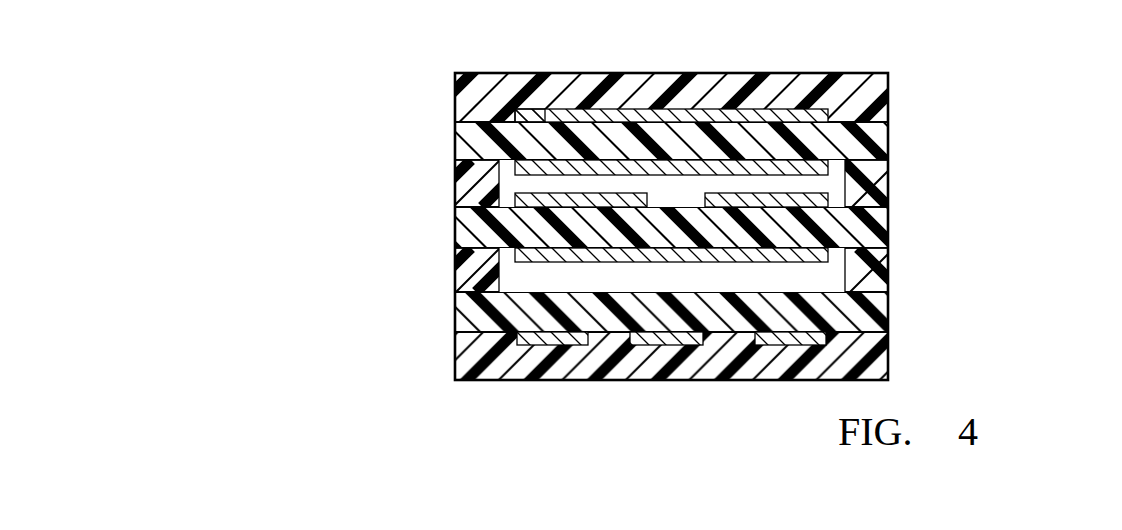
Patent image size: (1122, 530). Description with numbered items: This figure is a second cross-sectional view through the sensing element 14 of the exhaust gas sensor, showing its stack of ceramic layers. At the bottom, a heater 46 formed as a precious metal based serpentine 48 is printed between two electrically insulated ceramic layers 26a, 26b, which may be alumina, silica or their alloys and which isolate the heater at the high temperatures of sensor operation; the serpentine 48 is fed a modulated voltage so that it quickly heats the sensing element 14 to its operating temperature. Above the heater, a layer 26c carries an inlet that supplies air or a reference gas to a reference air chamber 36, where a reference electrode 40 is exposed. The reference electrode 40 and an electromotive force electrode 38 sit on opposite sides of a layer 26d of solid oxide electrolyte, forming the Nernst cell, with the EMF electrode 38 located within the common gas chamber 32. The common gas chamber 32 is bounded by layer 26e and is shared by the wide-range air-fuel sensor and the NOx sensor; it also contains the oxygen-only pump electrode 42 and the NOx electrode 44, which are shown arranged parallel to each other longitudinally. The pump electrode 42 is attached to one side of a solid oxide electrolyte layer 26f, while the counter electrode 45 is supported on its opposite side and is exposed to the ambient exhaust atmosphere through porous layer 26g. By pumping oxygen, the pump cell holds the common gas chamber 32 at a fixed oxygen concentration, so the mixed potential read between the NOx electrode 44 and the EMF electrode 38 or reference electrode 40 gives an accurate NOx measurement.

The sensing element 14 is at (375, 60).
The electrically insulated ceramic layer 26a is at (882, 360).
The electrically insulated ceramic layer 26b is at (882, 317).
The layer 26c is at (880, 275).
The solid oxide electrolyte layer 26d is at (877, 232).
The layer 26e is at (880, 175).
The solid oxide electrolyte layer 26f is at (885, 128).
The porous layer 26g is at (888, 75).
The counter electrode 45 is at (650, 110).
The oxygen-only pump electrode 42 is at (520, 124).
The common gas chamber 32 is at (512, 172).
The NOx electrode 44 is at (528, 203).
The EMF electrode 38 is at (826, 202).
The reference electrode 40 is at (540, 262).
The reference air chamber 36 is at (516, 271).
The heater 46 is at (510, 350).
The precious metal based serpentine 48 is at (553, 342).